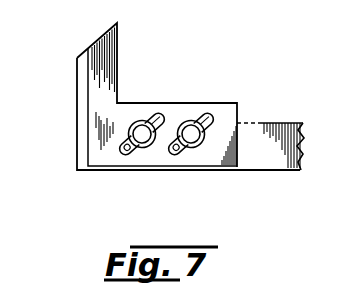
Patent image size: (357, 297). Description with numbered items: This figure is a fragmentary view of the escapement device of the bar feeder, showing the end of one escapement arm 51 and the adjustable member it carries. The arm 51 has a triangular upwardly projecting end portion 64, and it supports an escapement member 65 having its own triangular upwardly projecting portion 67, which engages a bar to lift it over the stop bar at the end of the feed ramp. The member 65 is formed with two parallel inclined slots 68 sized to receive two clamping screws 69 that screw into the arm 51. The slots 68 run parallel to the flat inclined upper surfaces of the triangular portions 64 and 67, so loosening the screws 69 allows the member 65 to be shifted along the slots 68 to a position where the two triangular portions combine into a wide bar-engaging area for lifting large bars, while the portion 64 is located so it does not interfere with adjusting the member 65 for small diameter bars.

The triangular upwardly projecting end portion 64 is at (82, 112).
The triangular upwardly projecting portion 67 is at (102, 60).
The escapement member 65 is at (133, 108).
The inclined slots 68 is at (133, 155).
The clamping screws 69 is at (191, 121).
The escapement arm 51 is at (262, 124).